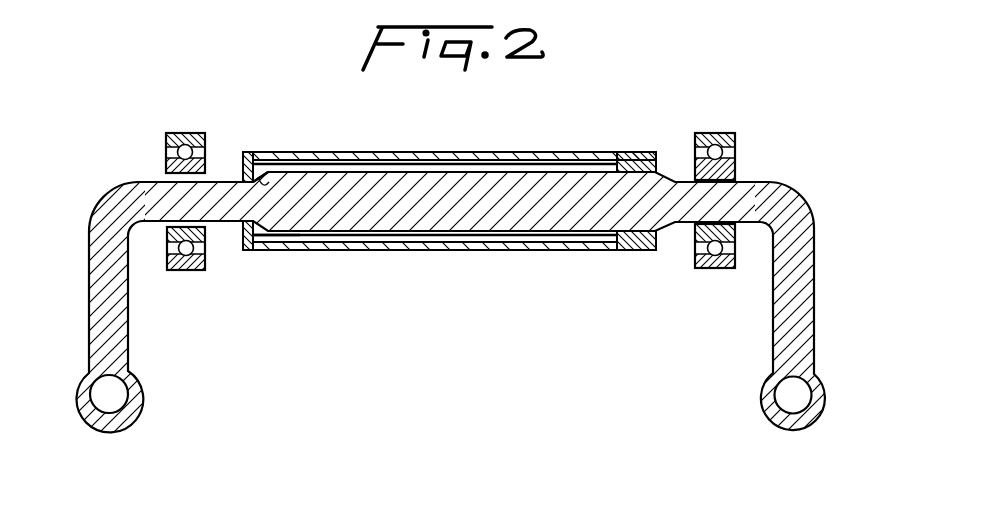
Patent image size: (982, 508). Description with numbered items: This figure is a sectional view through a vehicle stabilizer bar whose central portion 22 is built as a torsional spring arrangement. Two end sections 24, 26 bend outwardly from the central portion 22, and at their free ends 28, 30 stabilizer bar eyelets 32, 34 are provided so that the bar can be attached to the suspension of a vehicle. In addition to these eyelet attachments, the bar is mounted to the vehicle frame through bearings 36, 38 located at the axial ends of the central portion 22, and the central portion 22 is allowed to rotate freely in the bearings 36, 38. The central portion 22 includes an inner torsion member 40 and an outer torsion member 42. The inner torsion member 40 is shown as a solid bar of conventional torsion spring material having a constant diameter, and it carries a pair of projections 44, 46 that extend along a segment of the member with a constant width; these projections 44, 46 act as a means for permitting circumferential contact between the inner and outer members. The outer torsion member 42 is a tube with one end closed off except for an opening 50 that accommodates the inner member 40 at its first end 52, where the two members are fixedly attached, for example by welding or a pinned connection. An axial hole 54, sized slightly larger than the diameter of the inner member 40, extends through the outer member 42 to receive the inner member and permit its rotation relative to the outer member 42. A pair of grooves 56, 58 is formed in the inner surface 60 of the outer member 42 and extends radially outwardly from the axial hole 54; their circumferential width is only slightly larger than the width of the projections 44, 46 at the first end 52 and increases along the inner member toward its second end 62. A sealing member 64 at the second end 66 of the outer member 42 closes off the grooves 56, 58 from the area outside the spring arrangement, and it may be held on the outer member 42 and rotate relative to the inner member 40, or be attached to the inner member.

The central portion 22 is at (528, 253).
The end section 24 is at (780, 327).
The end section 26 is at (120, 335).
The free end 28 is at (790, 425).
The free end 30 is at (110, 420).
The stabilizer bar eyelet 32 is at (783, 395).
The stabilizer bar eyelet 34 is at (122, 396).
The bearing 36 is at (713, 132).
The bearing 38 is at (183, 132).
The inner torsion member 40 is at (455, 190).
The outer torsion member 42 is at (582, 156).
The projection 44 is at (527, 162).
The projection 46 is at (468, 237).
The opening 50 is at (640, 160).
The first end 52 is at (664, 250).
The axial hole 54 is at (262, 236).
The groove 56 is at (383, 160).
The groove 58 is at (381, 250).
The inner surface 60 is at (270, 178).
The second end 62 is at (238, 165).
The sealing member 64 is at (247, 152).
The second end 66 is at (246, 250).